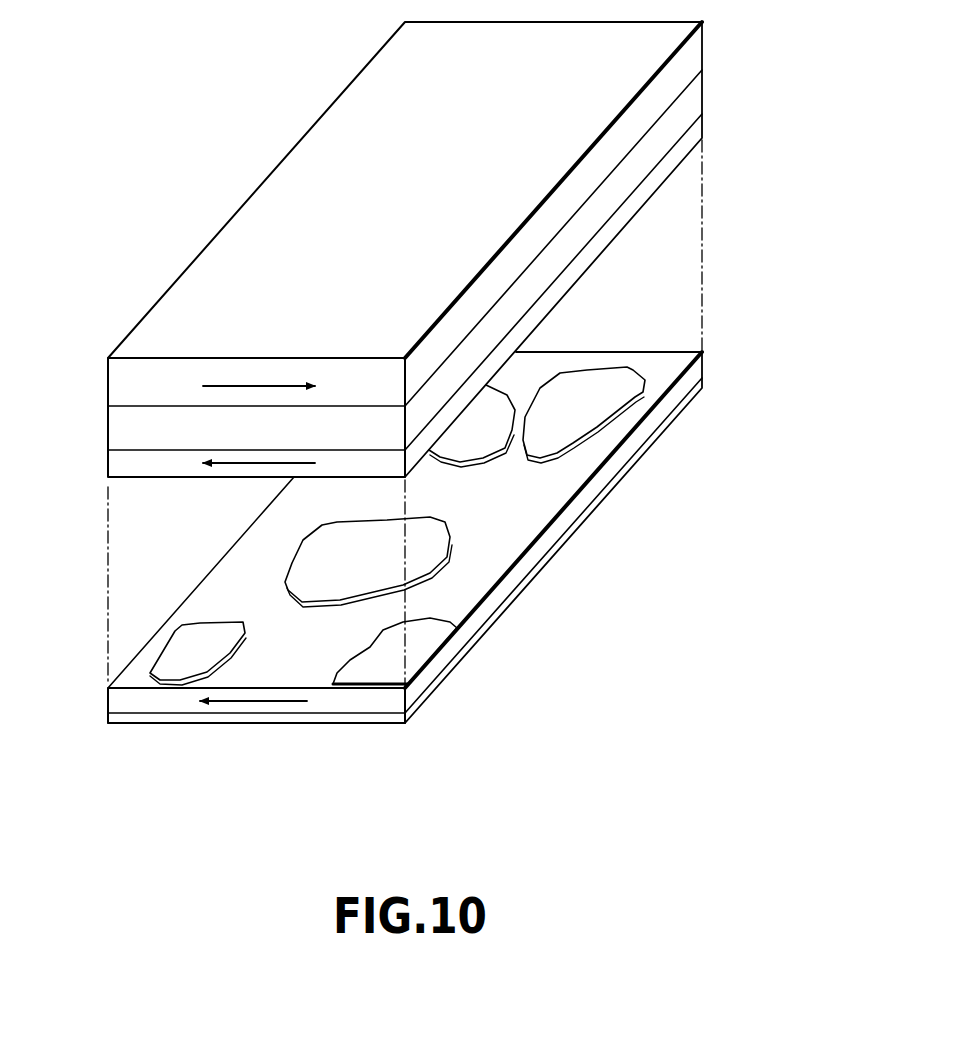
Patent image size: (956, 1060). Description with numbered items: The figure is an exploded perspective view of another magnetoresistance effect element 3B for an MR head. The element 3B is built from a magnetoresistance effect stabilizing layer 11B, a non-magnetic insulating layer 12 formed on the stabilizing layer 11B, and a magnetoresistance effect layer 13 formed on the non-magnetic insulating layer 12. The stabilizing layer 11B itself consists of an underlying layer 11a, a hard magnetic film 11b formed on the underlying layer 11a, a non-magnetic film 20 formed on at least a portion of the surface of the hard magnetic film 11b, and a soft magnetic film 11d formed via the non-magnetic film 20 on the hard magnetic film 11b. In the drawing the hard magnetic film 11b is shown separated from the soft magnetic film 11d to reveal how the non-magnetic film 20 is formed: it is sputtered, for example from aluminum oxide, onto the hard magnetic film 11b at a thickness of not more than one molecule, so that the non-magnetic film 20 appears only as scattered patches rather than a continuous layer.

The magnetoresistance effect element 3B is at (212, 166).
The magnetoresistance effect layer 13 is at (93, 357).
The non-magnetic insulating layer 12 is at (93, 408).
The soft magnetic film 11d is at (174, 470).
The magnetoresistance effect stabilizing layer 11B is at (93, 454).
The hard magnetic film 11b is at (423, 683).
The underlying layer 11a is at (365, 717).
The non-magnetic film 20 is at (188, 663).